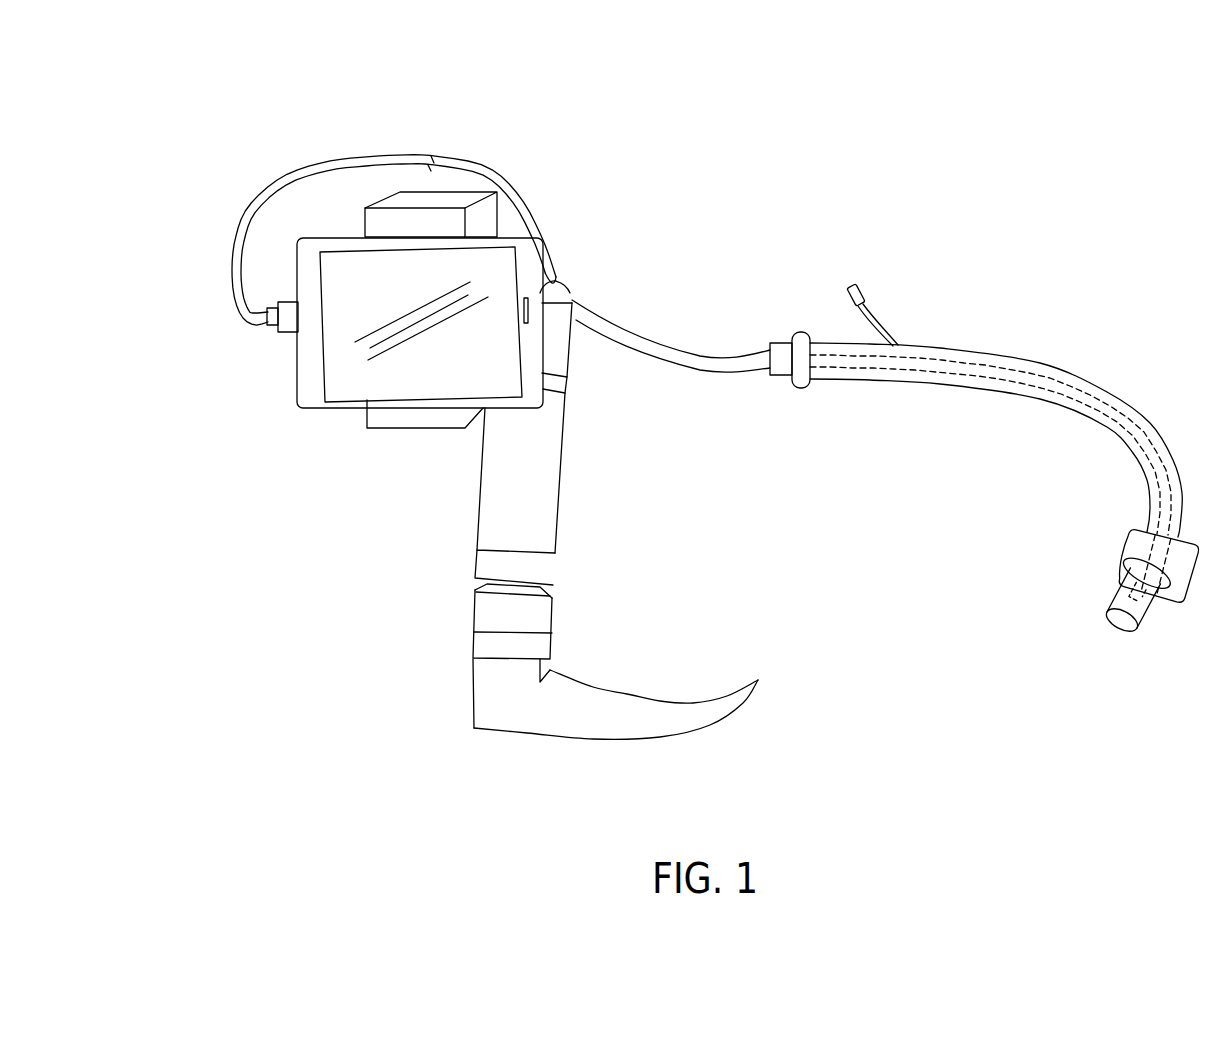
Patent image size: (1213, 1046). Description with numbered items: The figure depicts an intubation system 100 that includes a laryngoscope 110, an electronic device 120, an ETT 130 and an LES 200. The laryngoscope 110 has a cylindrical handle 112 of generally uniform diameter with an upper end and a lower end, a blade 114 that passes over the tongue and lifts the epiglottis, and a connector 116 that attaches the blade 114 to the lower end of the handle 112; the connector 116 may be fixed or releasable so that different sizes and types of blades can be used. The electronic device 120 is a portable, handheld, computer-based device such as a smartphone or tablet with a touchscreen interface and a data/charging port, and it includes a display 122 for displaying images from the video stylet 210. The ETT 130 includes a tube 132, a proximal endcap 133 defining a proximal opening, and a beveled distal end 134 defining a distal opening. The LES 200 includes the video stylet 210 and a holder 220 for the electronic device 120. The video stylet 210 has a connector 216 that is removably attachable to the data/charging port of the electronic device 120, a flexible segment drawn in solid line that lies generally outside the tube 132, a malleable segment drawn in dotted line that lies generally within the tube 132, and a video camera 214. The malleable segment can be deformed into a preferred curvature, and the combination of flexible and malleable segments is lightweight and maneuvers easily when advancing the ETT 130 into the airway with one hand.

The intubation system 100 is at (856, 182).
The laryngoscope 110 is at (449, 582).
The handle 112 is at (562, 477).
The blade 114 is at (615, 712).
The connector 116 is at (553, 613).
The electronic device 120 is at (307, 415).
The display 122 is at (331, 363).
The ETT 130 is at (1061, 347).
The tube 132 is at (1023, 395).
The proximal endcap 133 is at (770, 380).
The beveled distal end 134 is at (1110, 632).
The LES 200 is at (567, 204).
The video stylet 210 is at (659, 307).
The video camera 214 is at (1116, 592).
The connector 216 is at (278, 332).
The holder 220 is at (355, 199).